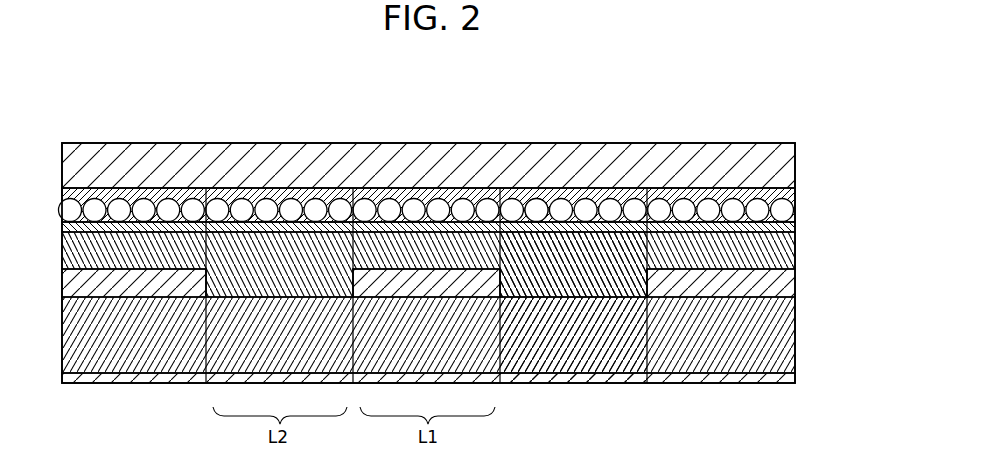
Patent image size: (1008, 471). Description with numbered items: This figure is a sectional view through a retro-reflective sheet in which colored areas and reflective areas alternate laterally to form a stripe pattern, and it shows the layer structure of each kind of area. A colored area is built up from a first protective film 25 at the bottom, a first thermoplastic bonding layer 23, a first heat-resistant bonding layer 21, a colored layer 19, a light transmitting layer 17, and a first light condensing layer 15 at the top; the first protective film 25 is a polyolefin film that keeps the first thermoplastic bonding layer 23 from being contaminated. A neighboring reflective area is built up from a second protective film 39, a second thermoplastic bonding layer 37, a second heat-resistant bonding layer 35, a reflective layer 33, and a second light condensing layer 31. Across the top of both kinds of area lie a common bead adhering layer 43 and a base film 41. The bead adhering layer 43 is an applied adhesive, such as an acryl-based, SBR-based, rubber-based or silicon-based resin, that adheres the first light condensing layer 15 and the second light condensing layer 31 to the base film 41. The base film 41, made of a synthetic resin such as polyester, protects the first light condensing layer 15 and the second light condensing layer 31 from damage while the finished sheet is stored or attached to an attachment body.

The base film 41 is at (797, 154).
The bead adhering layer 43 is at (797, 190).
The first light condensing layer 15 is at (796, 209).
The second light condensing layer 31 is at (620, 195).
The reflective layer 33 is at (540, 210).
The light transmitting layer 17 is at (797, 228).
The colored layer 19 is at (784, 263).
The first heat-resistant bonding layer 21 is at (787, 286).
The first thermoplastic bonding layer 23 is at (787, 352).
The first protective film 25 is at (780, 384).
The second heat-resistant bonding layer 35 is at (532, 272).
The second thermoplastic bonding layer 37 is at (626, 384).
The second protective film 39 is at (590, 384).